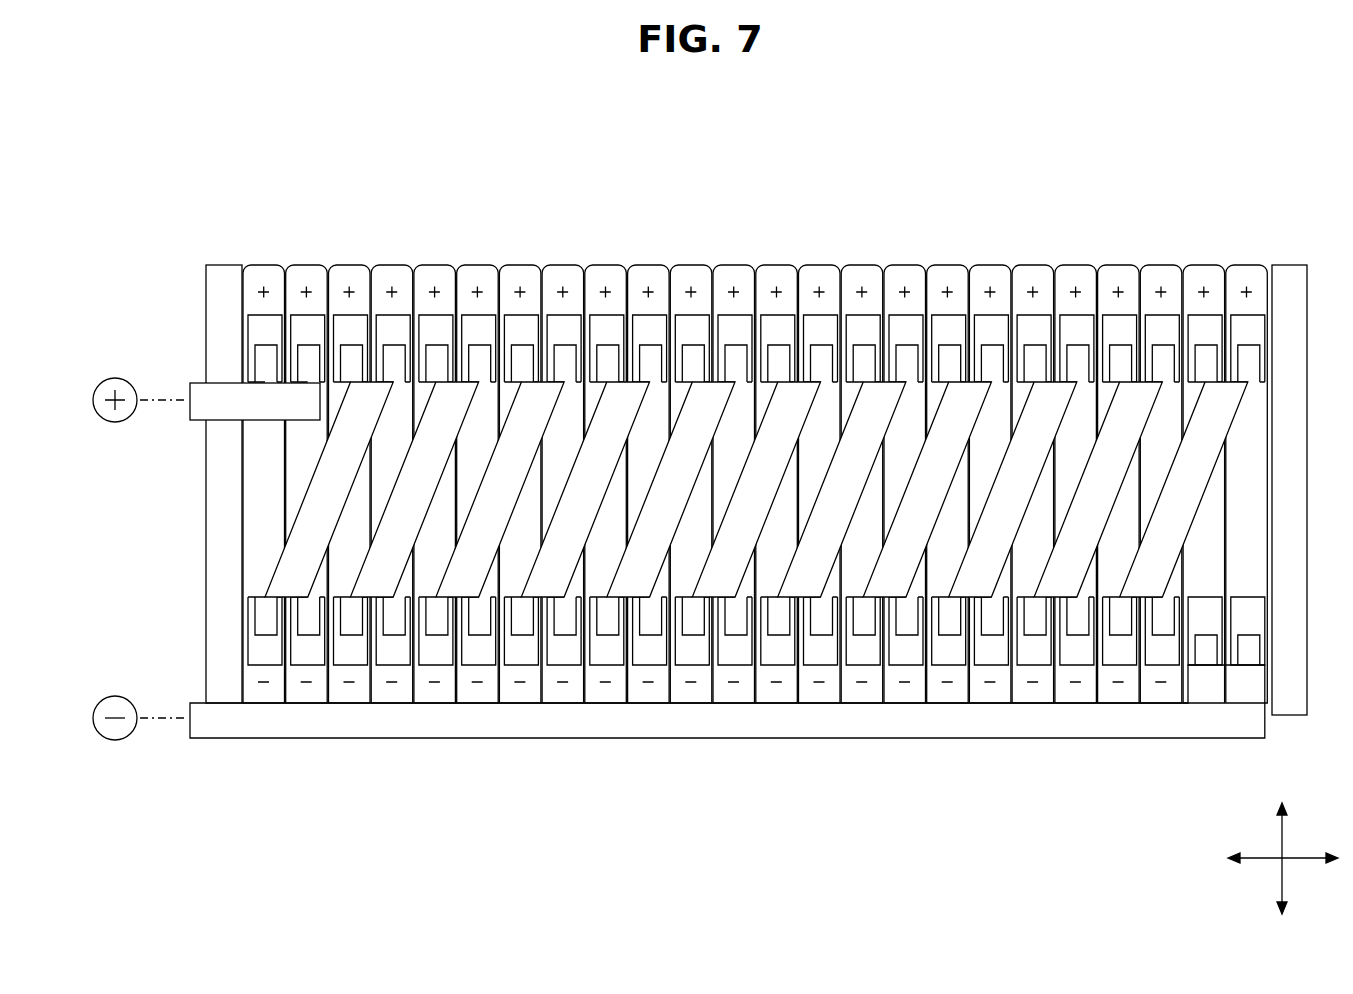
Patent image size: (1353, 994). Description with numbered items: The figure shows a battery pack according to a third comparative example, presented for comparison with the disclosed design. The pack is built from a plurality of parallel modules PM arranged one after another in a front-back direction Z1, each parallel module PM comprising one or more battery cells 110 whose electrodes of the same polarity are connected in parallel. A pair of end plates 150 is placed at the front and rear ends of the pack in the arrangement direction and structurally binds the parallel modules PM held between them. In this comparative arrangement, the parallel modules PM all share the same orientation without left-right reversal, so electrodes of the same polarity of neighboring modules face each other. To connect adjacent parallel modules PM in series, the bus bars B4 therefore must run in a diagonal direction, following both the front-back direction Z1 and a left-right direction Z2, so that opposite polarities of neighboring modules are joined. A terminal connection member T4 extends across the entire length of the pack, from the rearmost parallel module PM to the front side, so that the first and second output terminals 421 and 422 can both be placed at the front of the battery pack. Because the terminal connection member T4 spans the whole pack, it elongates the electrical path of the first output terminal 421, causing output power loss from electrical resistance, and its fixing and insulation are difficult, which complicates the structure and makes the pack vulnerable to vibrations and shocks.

The end plate 150 is at (221, 268).
The battery cell 110 is at (699, 268).
The bus bar B4 is at (831, 468).
The parallel module PM is at (1057, 253).
The second output terminal 422 is at (116, 377).
The first output terminal 421 is at (116, 695).
The terminal connection member T4 is at (705, 741).
The front-back direction Z1 is at (1261, 858).
The left-right direction Z2 is at (1281, 840).